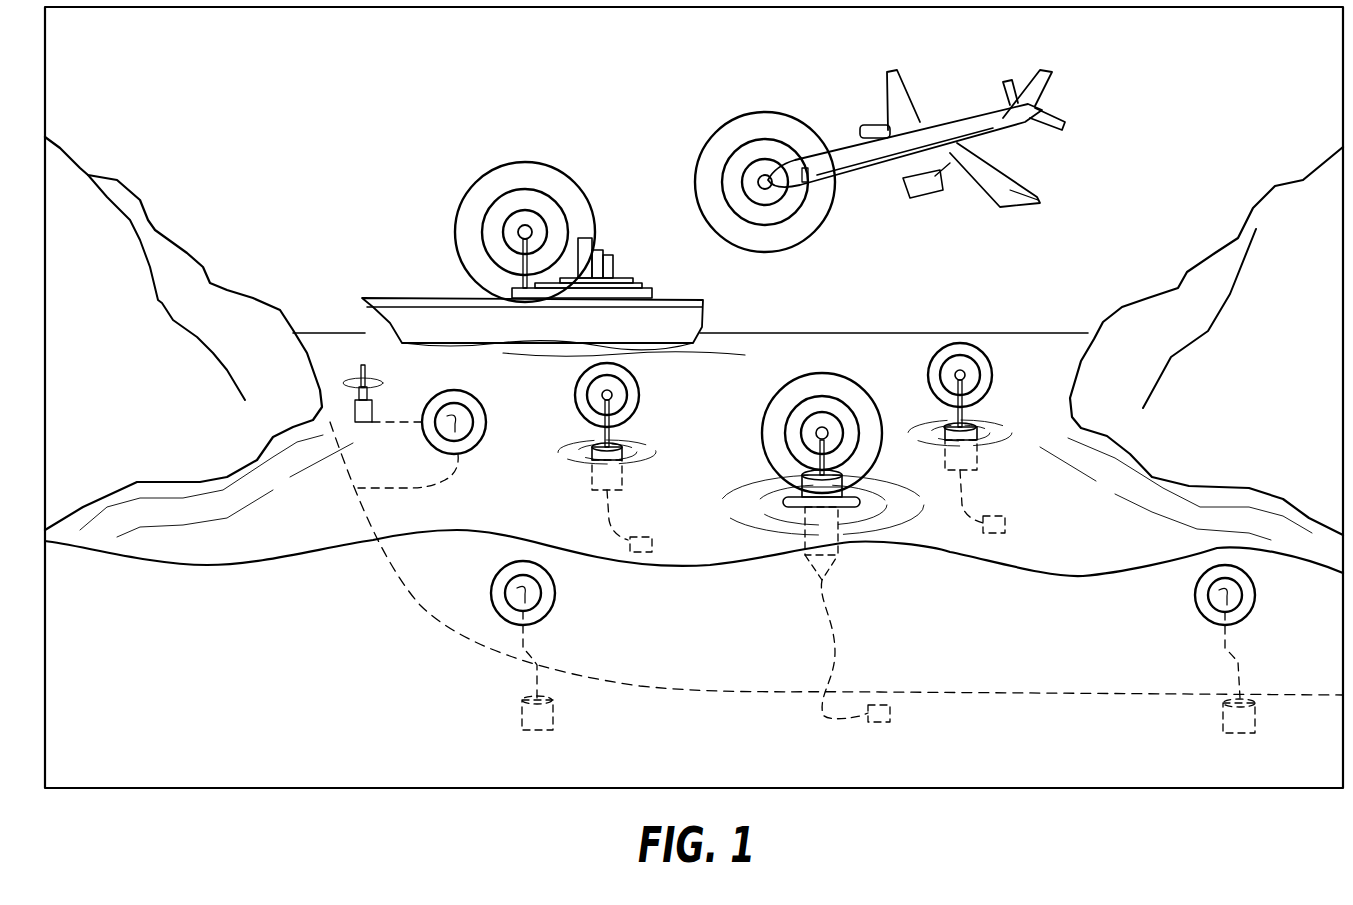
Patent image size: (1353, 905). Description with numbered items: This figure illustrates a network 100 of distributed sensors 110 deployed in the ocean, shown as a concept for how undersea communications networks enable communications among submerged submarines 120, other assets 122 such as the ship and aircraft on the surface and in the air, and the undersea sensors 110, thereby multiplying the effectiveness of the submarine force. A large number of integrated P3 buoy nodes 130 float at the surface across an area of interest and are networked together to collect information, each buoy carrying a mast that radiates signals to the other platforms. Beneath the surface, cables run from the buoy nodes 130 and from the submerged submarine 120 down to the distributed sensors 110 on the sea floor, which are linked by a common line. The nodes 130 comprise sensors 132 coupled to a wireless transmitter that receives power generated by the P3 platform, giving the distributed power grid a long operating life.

The network 100 is at (336, 658).
The distributed sensors 110 is at (640, 535).
The submerged submarine 120 is at (410, 492).
The other assets 122 is at (438, 298).
The P3 buoy nodes 130 is at (617, 473).
The sensors 132 is at (880, 722).